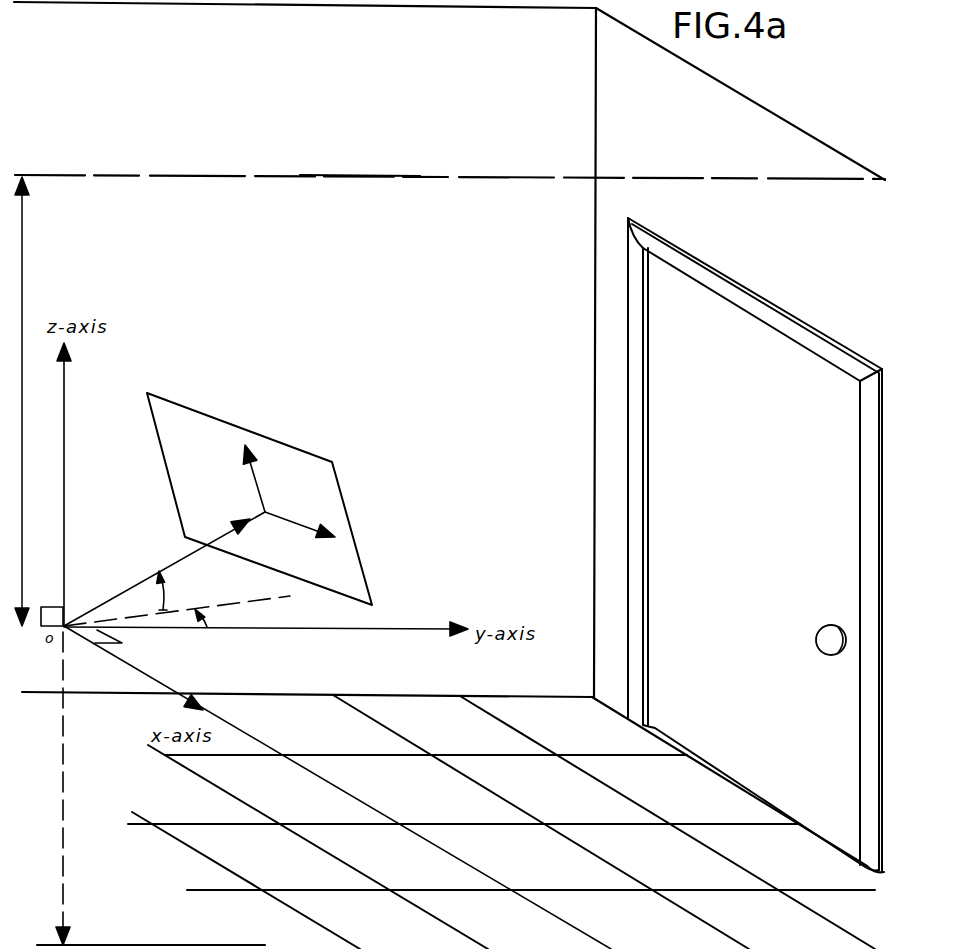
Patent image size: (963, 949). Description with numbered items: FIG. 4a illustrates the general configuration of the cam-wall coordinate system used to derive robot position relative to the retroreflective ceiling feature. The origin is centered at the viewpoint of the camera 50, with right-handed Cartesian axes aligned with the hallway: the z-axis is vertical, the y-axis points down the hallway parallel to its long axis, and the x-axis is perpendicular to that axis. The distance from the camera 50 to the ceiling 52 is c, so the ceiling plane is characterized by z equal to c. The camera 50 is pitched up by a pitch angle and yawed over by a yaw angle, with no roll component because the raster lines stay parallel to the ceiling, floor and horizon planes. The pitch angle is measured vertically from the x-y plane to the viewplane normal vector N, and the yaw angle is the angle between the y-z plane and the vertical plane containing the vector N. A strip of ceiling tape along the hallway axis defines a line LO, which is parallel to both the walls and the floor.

The camera 50 is at (218, 510).
The ceiling 52 is at (32, 180).
The line LO is at (350, 180).
The distance from camera to ceiling c is at (21, 401).
The viewplane normal vector N is at (67, 622).